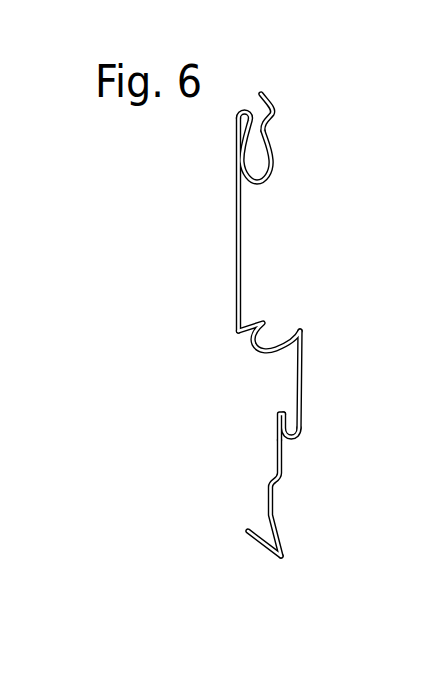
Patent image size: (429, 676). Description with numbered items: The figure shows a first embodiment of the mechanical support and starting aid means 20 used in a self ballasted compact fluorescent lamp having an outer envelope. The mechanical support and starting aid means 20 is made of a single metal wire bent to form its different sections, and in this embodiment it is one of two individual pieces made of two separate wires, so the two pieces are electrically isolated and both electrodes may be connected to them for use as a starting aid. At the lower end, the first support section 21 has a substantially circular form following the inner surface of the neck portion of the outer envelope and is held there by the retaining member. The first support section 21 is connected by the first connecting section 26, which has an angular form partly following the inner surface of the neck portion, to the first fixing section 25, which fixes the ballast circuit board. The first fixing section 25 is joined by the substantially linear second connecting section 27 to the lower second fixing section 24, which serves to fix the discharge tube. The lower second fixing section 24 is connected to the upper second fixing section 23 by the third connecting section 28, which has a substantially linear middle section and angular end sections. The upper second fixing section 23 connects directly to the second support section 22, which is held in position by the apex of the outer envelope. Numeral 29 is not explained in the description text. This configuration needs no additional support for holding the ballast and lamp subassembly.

The mechanical support and starting aid means 20 is at (190, 247).
The first support section 21 is at (262, 544).
The second support section 22 is at (276, 112).
The upper second fixing section 23 is at (276, 165).
The lower second fixing section 24 is at (268, 351).
The first fixing section 25 is at (302, 432).
The first connecting section 26 is at (271, 482).
The second connecting section 27 is at (303, 372).
The third connecting section 28 is at (241, 255).
The clamping lip 29 is at (278, 416).